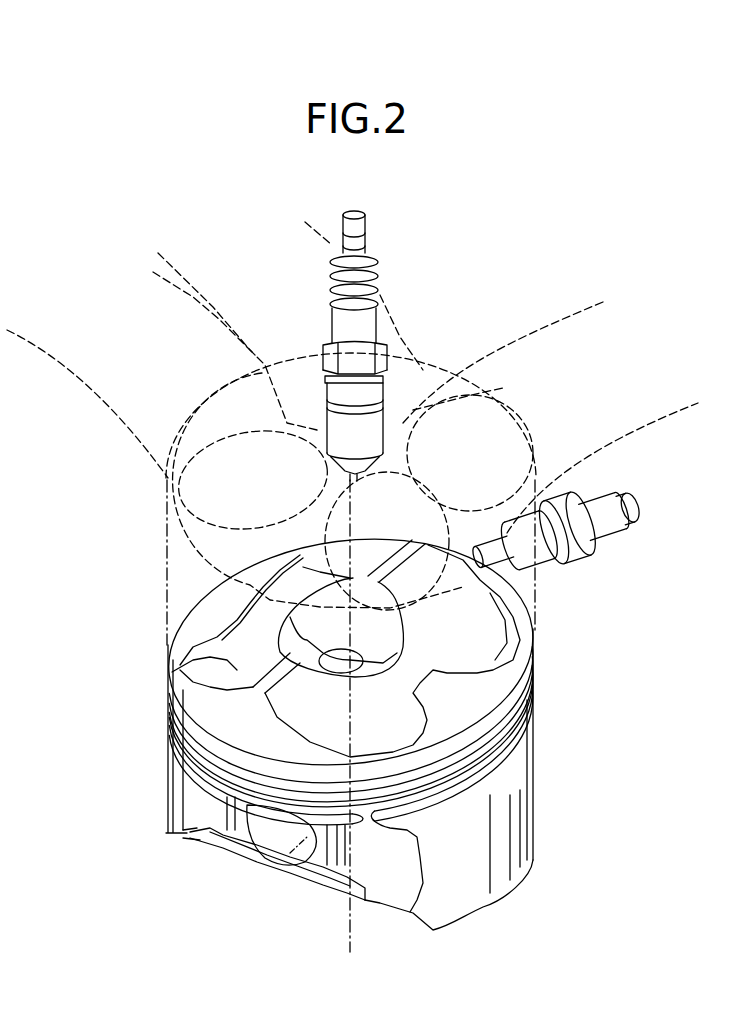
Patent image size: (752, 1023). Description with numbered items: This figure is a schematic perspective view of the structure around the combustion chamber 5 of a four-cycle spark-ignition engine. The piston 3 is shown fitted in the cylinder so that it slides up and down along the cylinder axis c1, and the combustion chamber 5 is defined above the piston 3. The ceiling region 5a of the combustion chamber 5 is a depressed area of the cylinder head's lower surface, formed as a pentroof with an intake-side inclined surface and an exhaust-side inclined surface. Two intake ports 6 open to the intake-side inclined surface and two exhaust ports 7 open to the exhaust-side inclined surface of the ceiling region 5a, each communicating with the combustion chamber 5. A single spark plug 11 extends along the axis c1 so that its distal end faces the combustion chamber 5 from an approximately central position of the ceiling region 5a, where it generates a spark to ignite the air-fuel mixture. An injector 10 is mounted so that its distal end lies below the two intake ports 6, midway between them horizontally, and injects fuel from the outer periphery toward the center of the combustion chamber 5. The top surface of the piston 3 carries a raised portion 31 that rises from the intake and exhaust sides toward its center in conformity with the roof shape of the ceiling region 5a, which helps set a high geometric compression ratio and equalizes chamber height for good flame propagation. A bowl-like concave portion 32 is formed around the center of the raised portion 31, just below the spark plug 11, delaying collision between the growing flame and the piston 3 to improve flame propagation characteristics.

The piston 3 is at (157, 770).
The combustion chamber 5 is at (165, 553).
The ceiling region 5a is at (430, 367).
The intake port 6 is at (603, 302).
The exhaust port 7 is at (170, 262).
The injector 10 is at (570, 565).
The spark plug 11 is at (338, 313).
The raised portion 31 is at (172, 672).
The concave portion 32 is at (305, 621).
The axis c1 is at (340, 923).